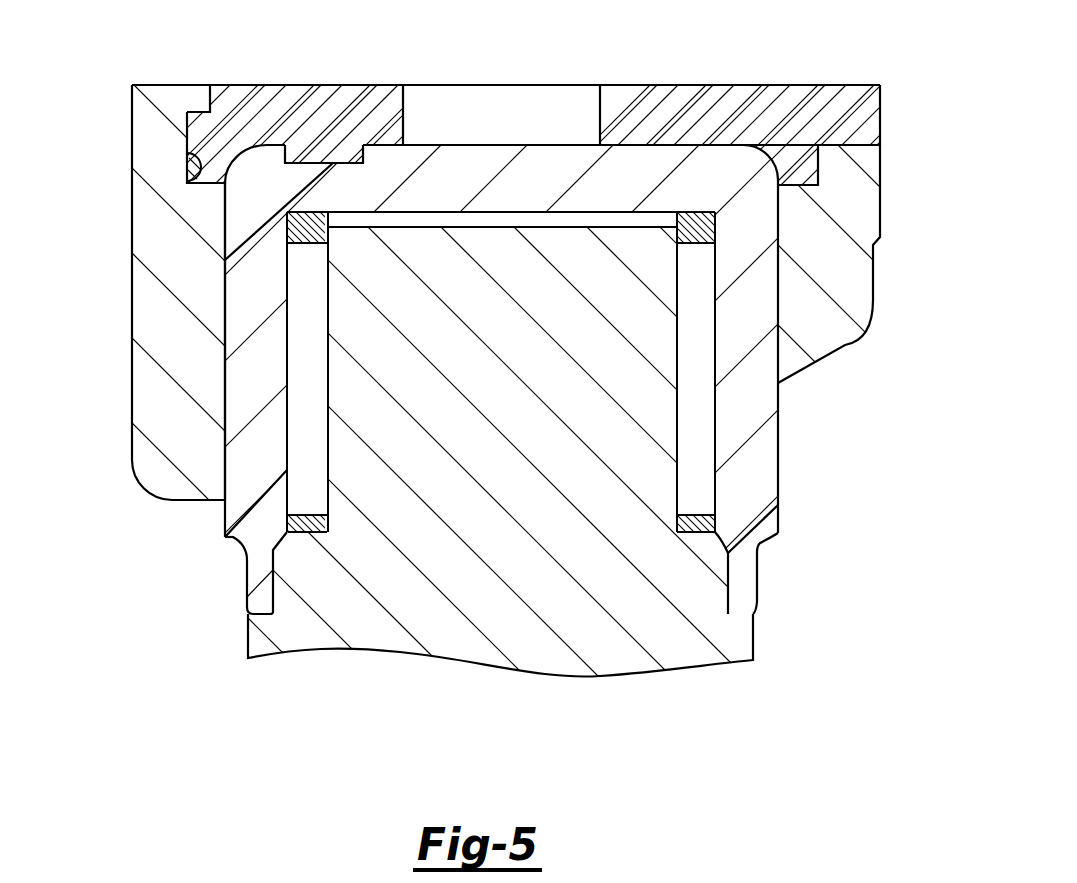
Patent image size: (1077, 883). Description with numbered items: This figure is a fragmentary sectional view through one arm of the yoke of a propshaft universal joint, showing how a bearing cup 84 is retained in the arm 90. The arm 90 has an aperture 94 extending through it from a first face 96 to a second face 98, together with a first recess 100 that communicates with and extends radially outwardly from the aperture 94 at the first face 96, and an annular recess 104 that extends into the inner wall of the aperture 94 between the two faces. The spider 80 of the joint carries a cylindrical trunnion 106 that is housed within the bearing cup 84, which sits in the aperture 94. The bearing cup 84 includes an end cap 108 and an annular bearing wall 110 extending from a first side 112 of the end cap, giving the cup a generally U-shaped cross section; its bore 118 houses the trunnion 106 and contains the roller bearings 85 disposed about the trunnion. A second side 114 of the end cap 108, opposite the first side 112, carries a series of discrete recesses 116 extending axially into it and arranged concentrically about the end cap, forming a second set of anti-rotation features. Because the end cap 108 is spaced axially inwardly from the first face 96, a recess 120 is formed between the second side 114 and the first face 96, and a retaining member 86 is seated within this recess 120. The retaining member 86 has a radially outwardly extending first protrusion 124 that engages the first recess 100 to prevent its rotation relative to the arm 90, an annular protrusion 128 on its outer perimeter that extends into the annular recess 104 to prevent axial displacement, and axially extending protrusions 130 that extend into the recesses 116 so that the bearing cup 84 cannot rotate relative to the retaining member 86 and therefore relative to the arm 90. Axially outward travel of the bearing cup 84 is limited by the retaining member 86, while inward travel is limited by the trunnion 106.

The spider 80 is at (642, 707).
The bearing cup 84 is at (226, 538).
The roller bearings 85 is at (697, 428).
The retaining member 86 is at (743, 85).
The arm 90 is at (880, 185).
The aperture 94 is at (778, 317).
The first face 96 is at (170, 85).
The second face 98 is at (172, 500).
The first recess 100 is at (860, 142).
The annular recess 104 is at (187, 180).
The trunnion 106 is at (540, 458).
The end cap 108 is at (547, 145).
The annular bearing wall 110 is at (225, 535).
The first side 112 is at (472, 214).
The second side 114 is at (452, 145).
The recesses 116 is at (363, 146).
The bore 118 is at (287, 387).
The recess 120 is at (212, 103).
The first protrusion 124 is at (848, 97).
The annular protrusion 128 is at (186, 128).
The axially extending protrusions 130 is at (334, 164).